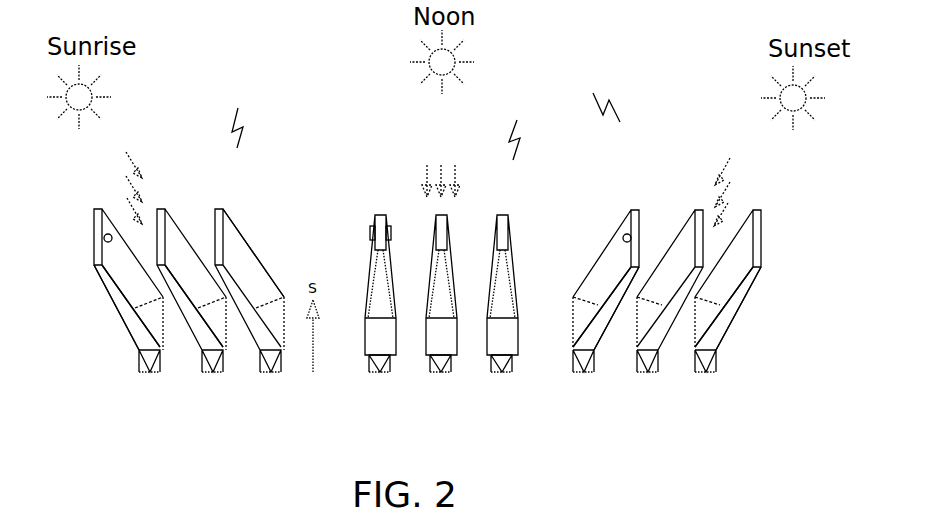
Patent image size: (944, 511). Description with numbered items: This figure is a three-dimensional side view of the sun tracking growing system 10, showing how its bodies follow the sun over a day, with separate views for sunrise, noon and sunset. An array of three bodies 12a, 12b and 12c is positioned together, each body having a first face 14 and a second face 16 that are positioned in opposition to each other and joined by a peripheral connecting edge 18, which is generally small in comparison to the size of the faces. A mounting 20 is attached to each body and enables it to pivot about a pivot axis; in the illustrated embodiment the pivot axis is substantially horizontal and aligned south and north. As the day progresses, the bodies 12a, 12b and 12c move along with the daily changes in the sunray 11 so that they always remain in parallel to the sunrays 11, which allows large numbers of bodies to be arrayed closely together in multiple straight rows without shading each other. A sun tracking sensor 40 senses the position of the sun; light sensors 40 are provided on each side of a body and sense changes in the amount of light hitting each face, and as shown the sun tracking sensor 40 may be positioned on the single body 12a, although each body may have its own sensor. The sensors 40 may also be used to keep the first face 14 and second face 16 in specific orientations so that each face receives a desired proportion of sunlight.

The sun tracking growing system 10 is at (426, 116).
The sunray 11 is at (127, 153).
The body 12a is at (135, 337).
The body 12b is at (212, 343).
The body 12c is at (277, 305).
The first face 14 is at (121, 318).
The second face 16 is at (247, 249).
The peripheral connecting edge 18 is at (173, 288).
The mounting 20 is at (207, 373).
The sun tracking sensor 40 is at (108, 233).